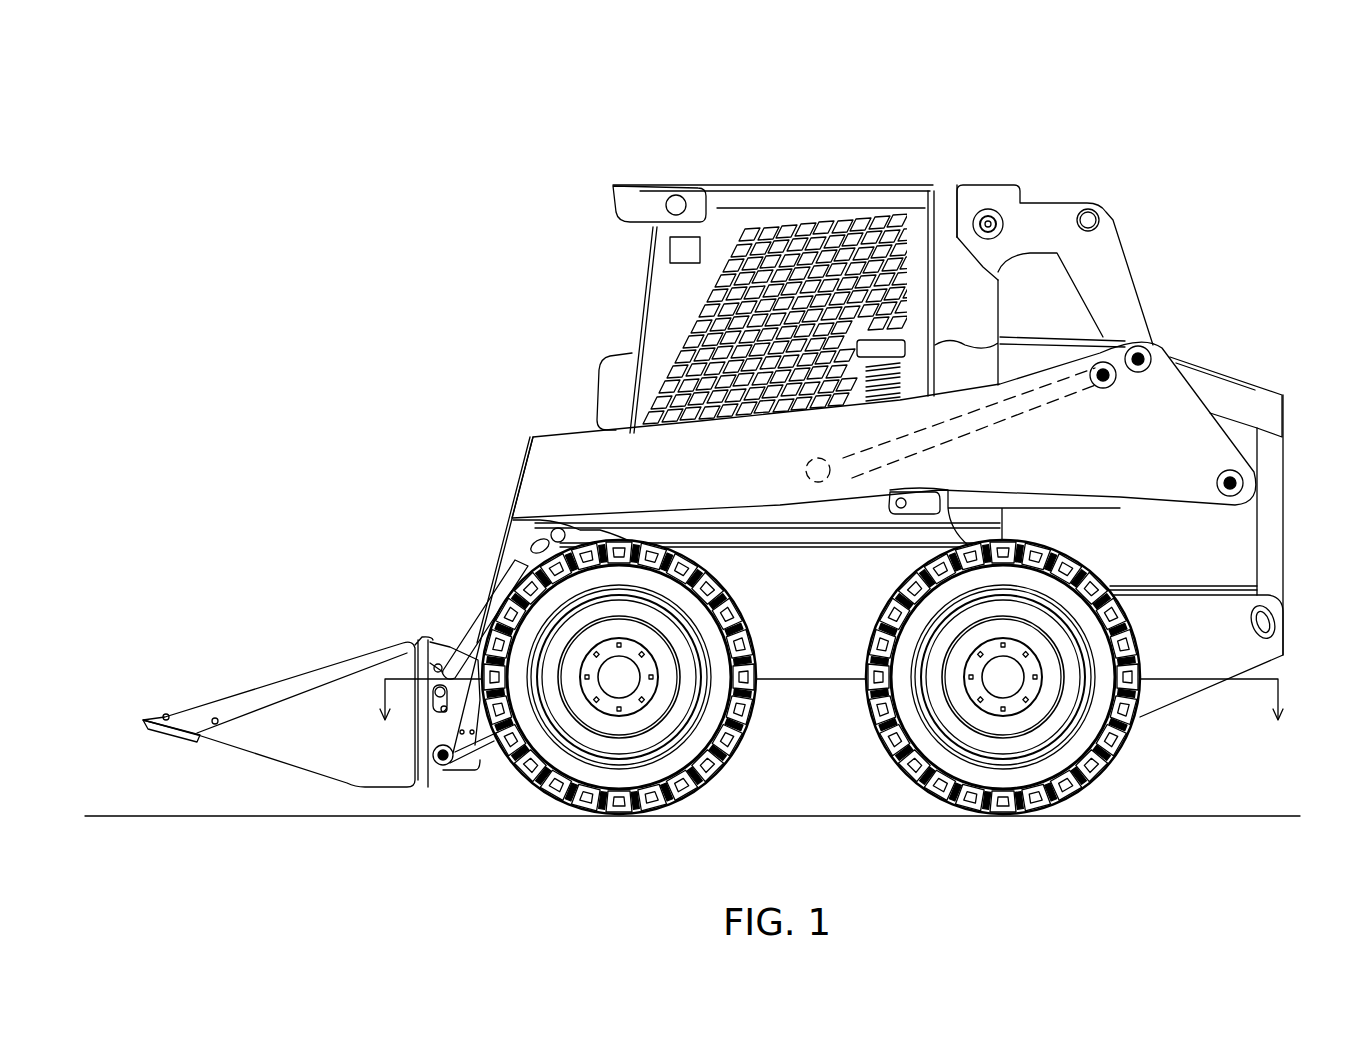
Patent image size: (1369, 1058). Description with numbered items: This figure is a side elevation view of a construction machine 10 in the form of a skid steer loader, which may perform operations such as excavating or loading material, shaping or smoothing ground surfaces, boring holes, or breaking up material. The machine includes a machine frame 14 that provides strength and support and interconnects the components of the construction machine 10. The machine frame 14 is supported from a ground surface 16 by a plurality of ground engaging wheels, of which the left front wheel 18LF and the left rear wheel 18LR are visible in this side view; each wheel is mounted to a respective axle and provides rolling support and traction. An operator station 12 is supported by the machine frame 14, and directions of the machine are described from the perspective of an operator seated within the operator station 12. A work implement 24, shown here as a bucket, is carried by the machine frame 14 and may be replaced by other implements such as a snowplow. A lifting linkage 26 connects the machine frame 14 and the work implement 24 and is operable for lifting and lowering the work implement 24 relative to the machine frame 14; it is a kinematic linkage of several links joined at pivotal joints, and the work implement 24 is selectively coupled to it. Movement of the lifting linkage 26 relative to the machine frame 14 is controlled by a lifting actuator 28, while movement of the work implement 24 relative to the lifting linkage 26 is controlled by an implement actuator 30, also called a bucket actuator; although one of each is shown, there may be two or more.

The construction machine 10 is at (1200, 112).
The operator station 12 is at (668, 285).
The machine frame 14 is at (826, 624).
The ground surface 16 is at (134, 816).
The left front wheel 18LF is at (690, 737).
The left rear wheel 18LR is at (1077, 740).
The work implement 24 is at (297, 727).
The lifting linkage 26 is at (557, 455).
The lifting actuator 28 is at (960, 440).
The implement actuator 30 is at (468, 650).